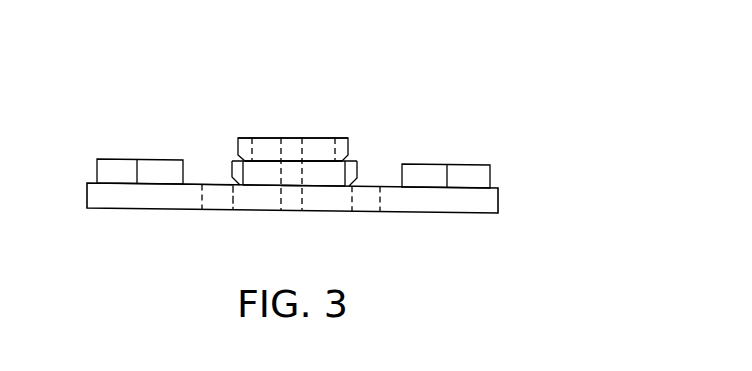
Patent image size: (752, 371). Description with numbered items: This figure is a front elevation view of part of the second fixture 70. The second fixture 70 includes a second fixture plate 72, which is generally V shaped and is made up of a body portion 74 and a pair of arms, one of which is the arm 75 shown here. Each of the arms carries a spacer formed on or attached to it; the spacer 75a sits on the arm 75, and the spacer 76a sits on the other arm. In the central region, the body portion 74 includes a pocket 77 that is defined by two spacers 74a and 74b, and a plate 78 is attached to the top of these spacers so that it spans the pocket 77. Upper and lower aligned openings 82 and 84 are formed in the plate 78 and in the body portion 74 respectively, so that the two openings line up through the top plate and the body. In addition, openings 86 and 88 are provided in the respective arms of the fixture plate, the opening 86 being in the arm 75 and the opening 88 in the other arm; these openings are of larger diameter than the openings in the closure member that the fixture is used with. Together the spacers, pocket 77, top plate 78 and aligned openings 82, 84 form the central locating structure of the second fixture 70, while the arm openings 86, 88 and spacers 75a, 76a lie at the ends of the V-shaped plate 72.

The second fixture 70 is at (493, 160).
The second fixture plate 72 is at (193, 176).
The body portion 74 is at (327, 198).
The spacer 74a is at (350, 175).
The spacer 74b is at (235, 175).
The arm 75 is at (485, 202).
The spacer 75a is at (457, 165).
The spacer 76a is at (112, 158).
The pocket 77 is at (305, 174).
The plate 78 is at (333, 139).
The upper opening 82 is at (293, 147).
The lower opening 84 is at (292, 198).
The opening 86 is at (368, 197).
The opening 88 is at (218, 198).